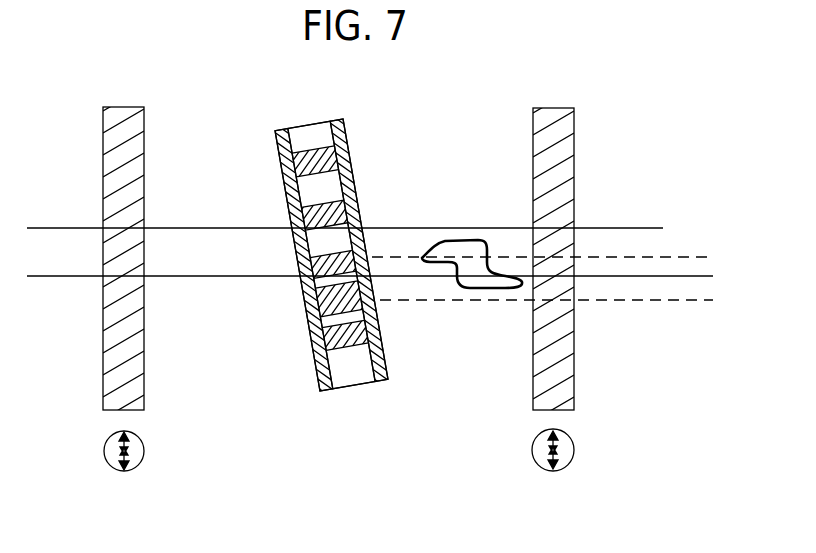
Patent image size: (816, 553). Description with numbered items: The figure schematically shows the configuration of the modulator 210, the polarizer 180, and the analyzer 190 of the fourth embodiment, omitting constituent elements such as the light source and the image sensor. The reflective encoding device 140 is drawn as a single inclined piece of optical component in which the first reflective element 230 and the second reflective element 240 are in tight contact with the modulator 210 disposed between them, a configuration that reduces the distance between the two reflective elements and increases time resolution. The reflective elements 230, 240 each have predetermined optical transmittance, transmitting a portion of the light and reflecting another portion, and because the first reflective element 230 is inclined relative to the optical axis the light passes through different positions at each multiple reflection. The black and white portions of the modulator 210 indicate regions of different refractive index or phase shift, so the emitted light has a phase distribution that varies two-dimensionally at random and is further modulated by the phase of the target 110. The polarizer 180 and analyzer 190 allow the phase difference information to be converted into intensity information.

The target 110 is at (472, 288).
The reflective encoding device 140 is at (368, 310).
The polarizer 180 is at (144, 386).
The analyzer 190 is at (574, 385).
The modulator 210 is at (352, 386).
The first reflective element 230 is at (330, 390).
The second reflective element 240 is at (392, 292).